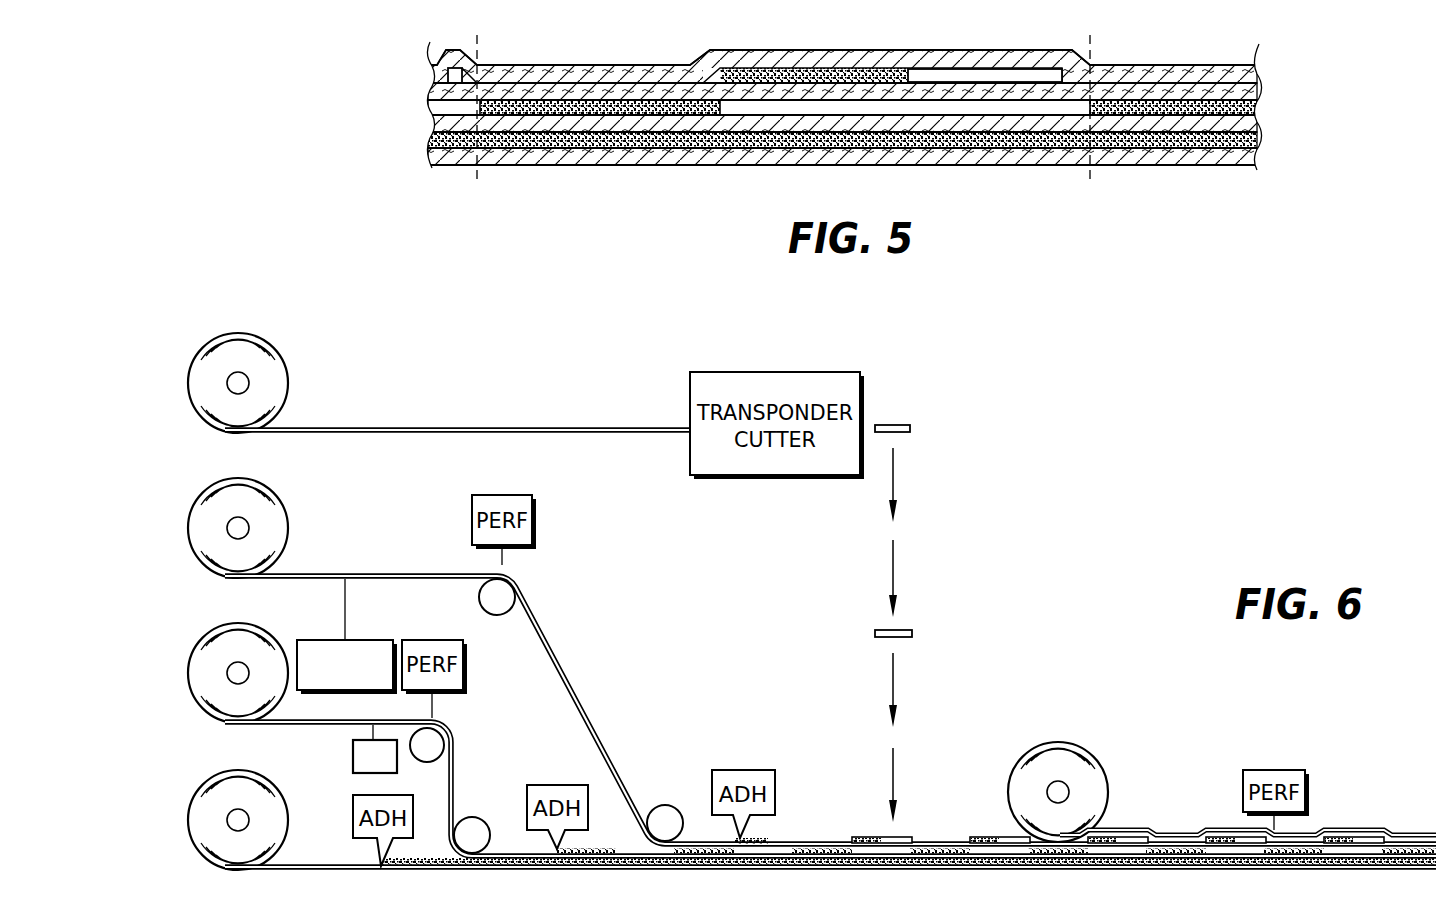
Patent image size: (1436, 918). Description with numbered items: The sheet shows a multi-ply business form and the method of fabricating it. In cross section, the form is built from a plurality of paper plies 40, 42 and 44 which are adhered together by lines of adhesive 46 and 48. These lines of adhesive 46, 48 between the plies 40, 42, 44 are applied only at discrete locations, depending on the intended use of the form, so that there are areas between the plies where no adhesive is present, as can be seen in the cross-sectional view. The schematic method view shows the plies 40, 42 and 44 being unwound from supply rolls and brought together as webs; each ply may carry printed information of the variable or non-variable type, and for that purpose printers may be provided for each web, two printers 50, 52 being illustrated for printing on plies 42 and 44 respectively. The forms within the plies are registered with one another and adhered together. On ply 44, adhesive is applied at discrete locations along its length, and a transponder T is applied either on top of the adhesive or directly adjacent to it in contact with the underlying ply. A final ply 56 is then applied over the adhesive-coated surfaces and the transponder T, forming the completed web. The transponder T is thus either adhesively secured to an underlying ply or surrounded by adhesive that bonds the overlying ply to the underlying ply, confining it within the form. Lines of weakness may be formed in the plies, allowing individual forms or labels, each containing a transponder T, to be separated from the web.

In FIG. 5, the paper ply 40 is at (1254, 158).
In FIG. 6, the paper ply 40 is at (335, 865).
In FIG. 5, the paper ply 42 is at (1258, 121).
In FIG. 6, the paper ply 42 is at (270, 727).
In FIG. 5, the paper ply 44 is at (1258, 72).
In FIG. 6, the paper ply 44 is at (285, 580).
In FIG. 5, the line of adhesive 46 is at (1257, 140).
In FIG. 5, the line of adhesive 48 is at (1260, 102).
In FIG. 6, the printer 50 is at (397, 760).
In FIG. 6, the printer 52 is at (365, 640).
In FIG. 6, the final ply 56 is at (1180, 837).
In FIG. 6, the transponder T is at (893, 425).